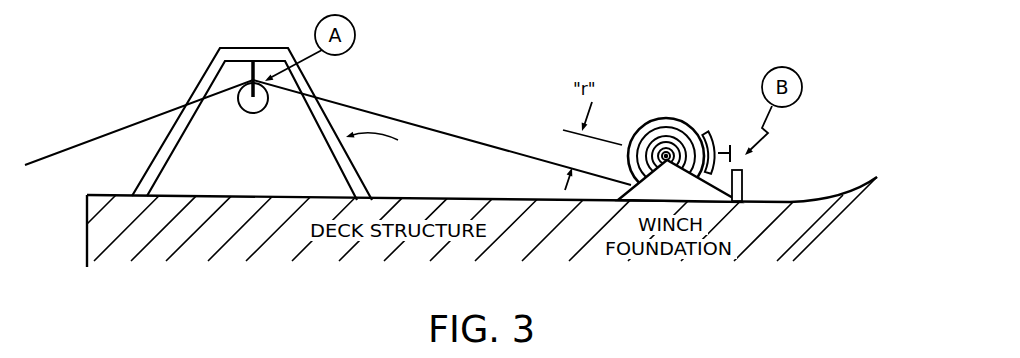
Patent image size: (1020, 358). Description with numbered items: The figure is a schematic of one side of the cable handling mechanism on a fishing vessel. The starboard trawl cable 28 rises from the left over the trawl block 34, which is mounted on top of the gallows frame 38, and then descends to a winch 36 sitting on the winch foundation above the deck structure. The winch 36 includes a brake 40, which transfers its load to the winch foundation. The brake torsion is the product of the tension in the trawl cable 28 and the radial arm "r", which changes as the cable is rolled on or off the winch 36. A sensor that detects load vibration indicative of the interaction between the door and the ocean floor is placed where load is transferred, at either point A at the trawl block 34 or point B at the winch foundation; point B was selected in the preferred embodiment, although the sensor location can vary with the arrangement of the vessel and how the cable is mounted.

The starboard trawl cable 28 is at (195, 97).
The trawl block 34 is at (240, 52).
The winch 36 is at (762, 181).
The gallows frame 38 is at (333, 150).
The brake 40 is at (726, 137).